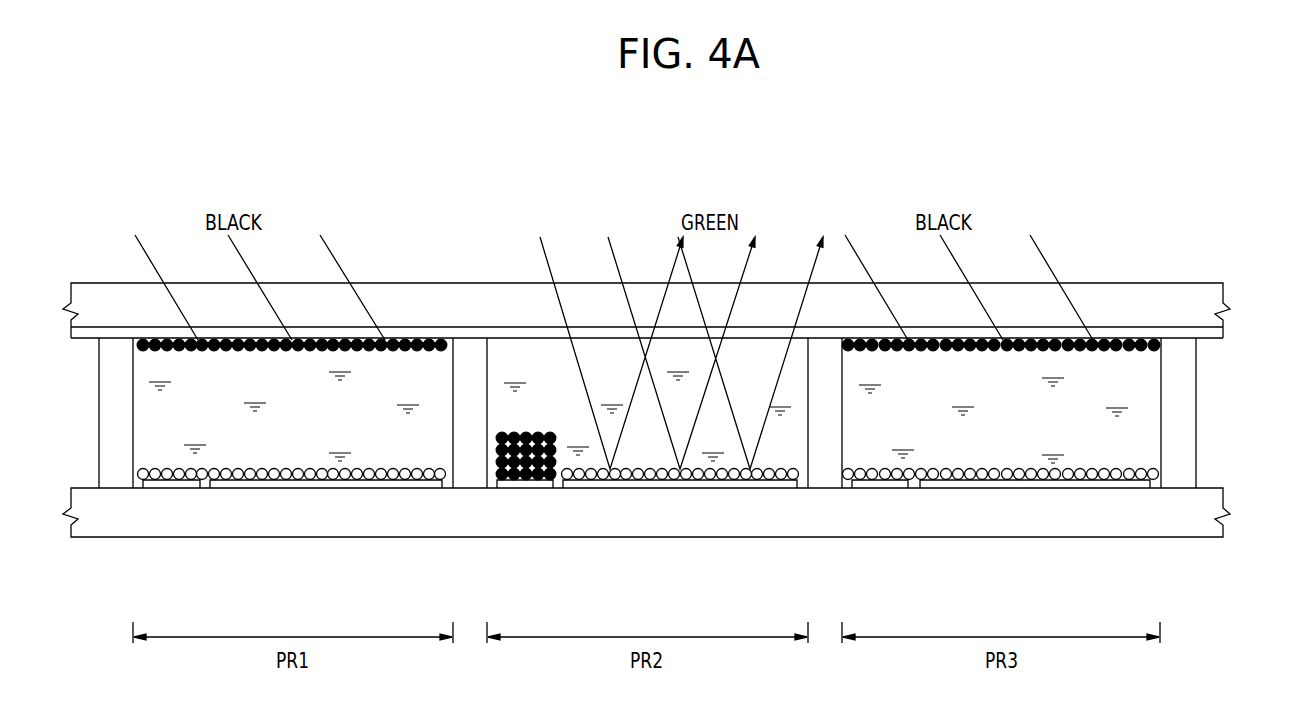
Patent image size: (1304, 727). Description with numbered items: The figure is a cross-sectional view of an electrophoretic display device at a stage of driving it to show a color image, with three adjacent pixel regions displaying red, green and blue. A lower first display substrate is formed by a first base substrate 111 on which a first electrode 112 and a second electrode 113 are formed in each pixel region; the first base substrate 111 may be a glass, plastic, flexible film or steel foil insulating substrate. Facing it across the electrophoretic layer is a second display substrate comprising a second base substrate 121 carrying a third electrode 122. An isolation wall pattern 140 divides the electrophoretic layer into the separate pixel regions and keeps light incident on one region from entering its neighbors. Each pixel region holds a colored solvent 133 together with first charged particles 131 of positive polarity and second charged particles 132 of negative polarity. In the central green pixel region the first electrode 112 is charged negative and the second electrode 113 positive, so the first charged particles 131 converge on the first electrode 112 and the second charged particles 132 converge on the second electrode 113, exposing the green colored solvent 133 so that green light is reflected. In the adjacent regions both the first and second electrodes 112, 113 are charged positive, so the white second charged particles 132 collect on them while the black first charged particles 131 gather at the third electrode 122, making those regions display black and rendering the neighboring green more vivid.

The first base substrate 111 is at (1223, 507).
The first electrode 112 is at (173, 485).
The second electrode 113 is at (345, 485).
The second base substrate 121 is at (1223, 297).
The third electrode 122 is at (1223, 336).
The first charged particles 131 is at (1152, 477).
The second charged particles 132 is at (1156, 351).
The colored solvent 133 is at (1125, 425).
The isolation wall pattern 140 is at (115, 485).